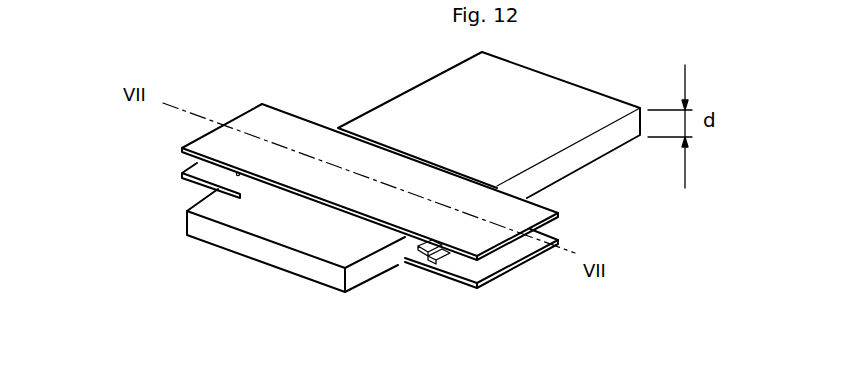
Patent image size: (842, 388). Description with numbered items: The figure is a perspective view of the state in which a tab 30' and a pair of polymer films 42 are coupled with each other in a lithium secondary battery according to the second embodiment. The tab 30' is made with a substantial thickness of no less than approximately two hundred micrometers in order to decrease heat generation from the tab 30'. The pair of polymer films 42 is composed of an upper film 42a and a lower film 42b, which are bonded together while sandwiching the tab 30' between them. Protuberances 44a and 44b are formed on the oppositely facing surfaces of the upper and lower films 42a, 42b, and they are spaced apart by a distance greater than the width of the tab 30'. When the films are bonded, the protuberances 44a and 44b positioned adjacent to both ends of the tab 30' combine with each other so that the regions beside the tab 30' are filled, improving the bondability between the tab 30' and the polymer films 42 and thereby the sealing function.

The polymer films 42 is at (83, 148).
The upper film 42a is at (183, 147).
The lower film 42b is at (183, 180).
The tab 30' is at (296, 269).
The protuberance 44a is at (430, 245).
The protuberance 44b is at (437, 257).